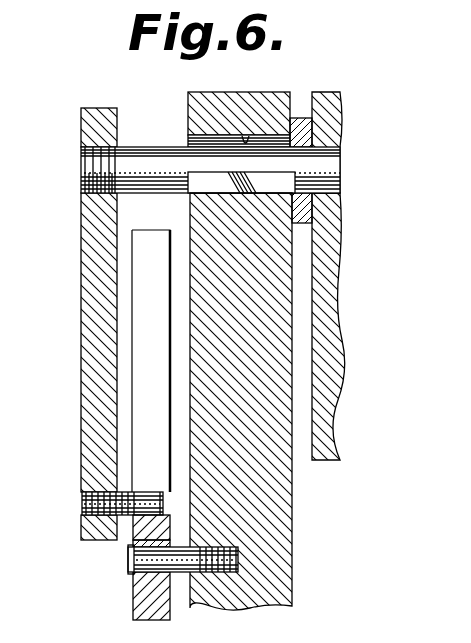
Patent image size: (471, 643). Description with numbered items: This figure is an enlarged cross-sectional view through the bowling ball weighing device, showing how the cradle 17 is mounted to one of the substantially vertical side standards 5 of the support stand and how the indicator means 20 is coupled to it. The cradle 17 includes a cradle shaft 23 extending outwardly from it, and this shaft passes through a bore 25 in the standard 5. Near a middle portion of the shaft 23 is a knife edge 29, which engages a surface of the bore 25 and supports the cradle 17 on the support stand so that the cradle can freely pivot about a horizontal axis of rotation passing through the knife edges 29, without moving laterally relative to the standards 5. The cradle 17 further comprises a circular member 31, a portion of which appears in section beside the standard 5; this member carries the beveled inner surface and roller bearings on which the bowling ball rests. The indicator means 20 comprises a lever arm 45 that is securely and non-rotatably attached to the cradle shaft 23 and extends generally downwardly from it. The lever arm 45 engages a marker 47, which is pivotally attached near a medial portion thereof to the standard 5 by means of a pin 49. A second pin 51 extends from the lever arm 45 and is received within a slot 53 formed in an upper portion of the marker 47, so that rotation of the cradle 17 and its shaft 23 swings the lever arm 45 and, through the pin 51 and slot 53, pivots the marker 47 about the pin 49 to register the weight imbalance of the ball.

The side standard 5 is at (192, 92).
The cradle 17 is at (313, 92).
The indicator means 20 is at (80, 472).
The cradle shaft 23 is at (163, 147).
The bore 25 is at (243, 136).
The knife edge 29 is at (242, 196).
The circular member 31 is at (336, 462).
The lever arm 45 is at (81, 108).
The marker 47 is at (133, 595).
The pin 49 is at (128, 560).
The pin 51 is at (160, 492).
The slot 53 is at (158, 357).